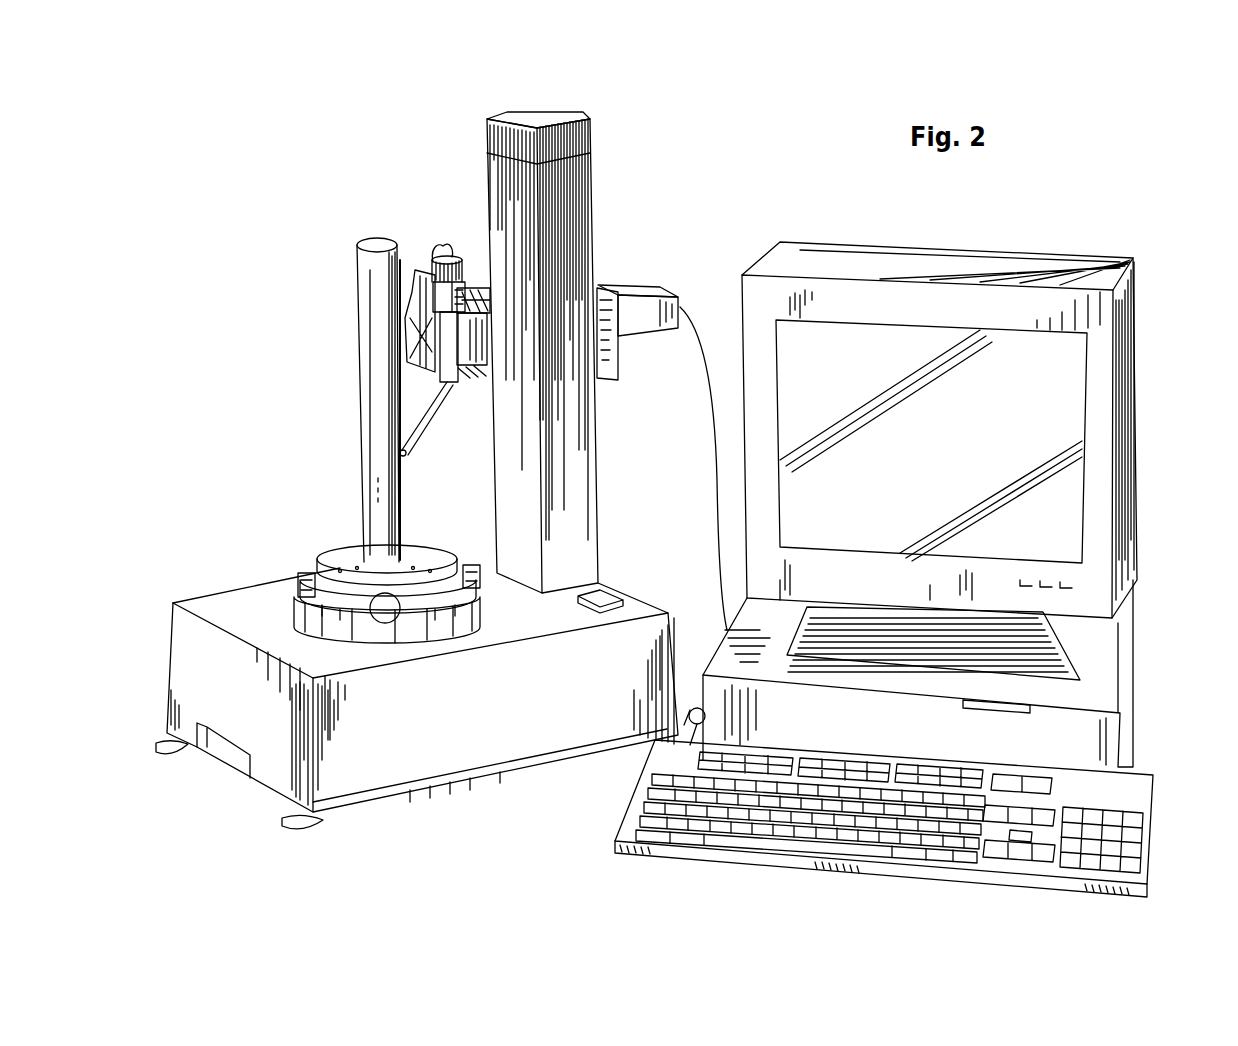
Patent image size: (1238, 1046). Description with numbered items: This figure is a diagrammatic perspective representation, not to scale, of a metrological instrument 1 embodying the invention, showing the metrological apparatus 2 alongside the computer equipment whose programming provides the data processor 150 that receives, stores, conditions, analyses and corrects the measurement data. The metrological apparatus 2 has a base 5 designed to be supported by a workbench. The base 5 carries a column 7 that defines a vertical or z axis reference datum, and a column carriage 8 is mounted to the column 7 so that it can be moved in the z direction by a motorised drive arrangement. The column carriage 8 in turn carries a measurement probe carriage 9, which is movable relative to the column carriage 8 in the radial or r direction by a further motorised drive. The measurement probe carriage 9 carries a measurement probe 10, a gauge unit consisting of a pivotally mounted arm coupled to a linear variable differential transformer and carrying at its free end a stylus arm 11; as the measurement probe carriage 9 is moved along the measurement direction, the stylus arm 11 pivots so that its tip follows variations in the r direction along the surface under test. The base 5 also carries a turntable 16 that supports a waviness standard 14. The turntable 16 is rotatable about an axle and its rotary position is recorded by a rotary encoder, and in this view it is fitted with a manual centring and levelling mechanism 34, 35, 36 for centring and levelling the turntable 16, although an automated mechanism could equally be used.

The metrological instrument 1 is at (233, 147).
The metrological apparatus 2 is at (236, 431).
The base 5 is at (487, 730).
The column 7 is at (583, 202).
The column carriage 8 is at (610, 360).
The measurement probe carriage 9 is at (653, 290).
The measurement probe 10 is at (463, 395).
The stylus arm 11 is at (428, 430).
The waviness standard 14 is at (367, 373).
The turntable 16 is at (330, 560).
The centring and levelling mechanism 34 is at (307, 577).
The centring and levelling mechanism 35 is at (352, 607).
The centring and levelling mechanism 36 is at (393, 615).
The data processor 150 is at (1118, 515).